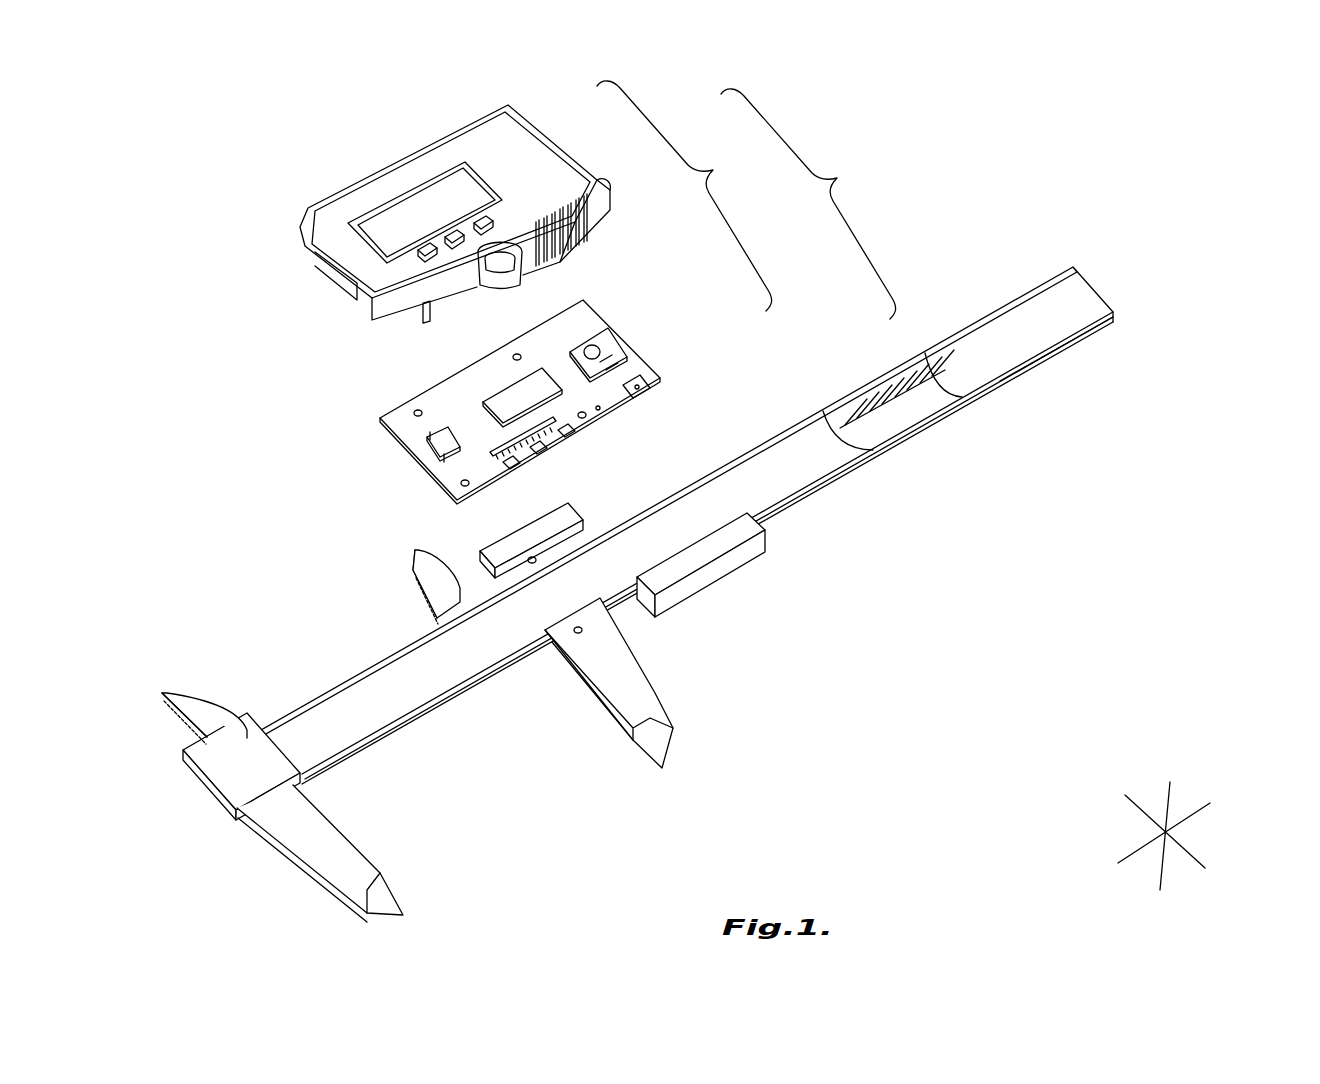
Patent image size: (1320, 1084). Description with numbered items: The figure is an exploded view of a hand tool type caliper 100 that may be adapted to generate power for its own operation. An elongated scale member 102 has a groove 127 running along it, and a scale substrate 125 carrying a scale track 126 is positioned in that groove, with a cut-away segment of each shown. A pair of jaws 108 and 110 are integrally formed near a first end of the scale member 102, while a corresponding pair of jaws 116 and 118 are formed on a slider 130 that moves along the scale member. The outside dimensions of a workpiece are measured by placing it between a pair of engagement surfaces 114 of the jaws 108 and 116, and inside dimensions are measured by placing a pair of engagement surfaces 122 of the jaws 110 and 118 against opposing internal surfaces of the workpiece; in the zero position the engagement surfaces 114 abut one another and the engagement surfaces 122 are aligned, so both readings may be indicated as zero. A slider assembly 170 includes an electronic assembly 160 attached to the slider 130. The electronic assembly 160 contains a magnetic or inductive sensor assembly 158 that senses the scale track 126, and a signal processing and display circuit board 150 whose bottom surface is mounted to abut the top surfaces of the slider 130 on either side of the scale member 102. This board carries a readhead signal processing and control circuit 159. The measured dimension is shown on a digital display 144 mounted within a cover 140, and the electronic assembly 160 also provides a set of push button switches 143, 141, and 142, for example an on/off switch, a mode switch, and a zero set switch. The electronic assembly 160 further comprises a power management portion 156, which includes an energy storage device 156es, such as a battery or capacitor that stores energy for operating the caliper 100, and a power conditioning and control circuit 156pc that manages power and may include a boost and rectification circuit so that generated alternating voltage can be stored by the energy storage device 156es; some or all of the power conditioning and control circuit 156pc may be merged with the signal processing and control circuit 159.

The hand tool type caliper 100 is at (1180, 176).
The scale member 102 is at (1098, 286).
The jaw 108 is at (297, 833).
The jaw 110 is at (185, 703).
The engagement surfaces 114 is at (351, 842).
The jaw 116 is at (650, 710).
The jaw 118 is at (417, 567).
The engagement surfaces 122 is at (188, 712).
The scale substrate 125 is at (875, 457).
The scale track 126 is at (957, 378).
The groove 127 is at (1043, 332).
The slider 130 is at (692, 462).
The cover 140 is at (566, 150).
The push button switch 141 is at (453, 247).
The push button switch 142 is at (490, 216).
The push button switch 143 is at (425, 258).
The digital display 144 is at (445, 212).
The signal processing and display circuit board 150 is at (641, 378).
The power management portion 156 is at (704, 284).
The energy storage device 156es is at (600, 345).
The power conditioning and control circuit 156pc is at (607, 357).
The magnetic or inductive sensor assembly 158 is at (490, 402).
The readhead signal processing and control circuit 159 is at (433, 438).
The electronic assembly 160 is at (684, 196).
The slider assembly 170 is at (808, 204).